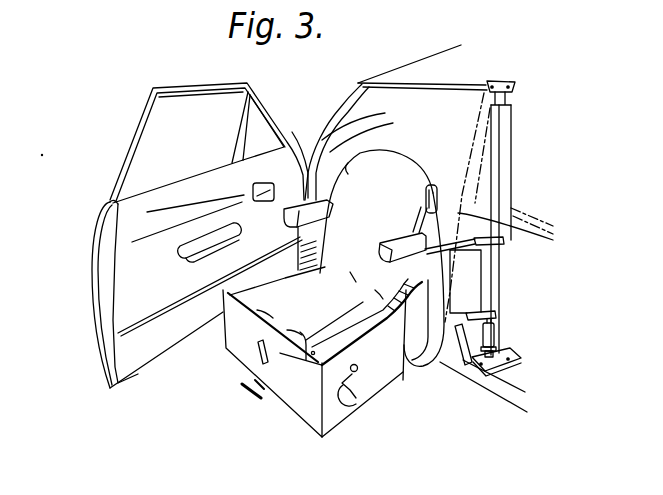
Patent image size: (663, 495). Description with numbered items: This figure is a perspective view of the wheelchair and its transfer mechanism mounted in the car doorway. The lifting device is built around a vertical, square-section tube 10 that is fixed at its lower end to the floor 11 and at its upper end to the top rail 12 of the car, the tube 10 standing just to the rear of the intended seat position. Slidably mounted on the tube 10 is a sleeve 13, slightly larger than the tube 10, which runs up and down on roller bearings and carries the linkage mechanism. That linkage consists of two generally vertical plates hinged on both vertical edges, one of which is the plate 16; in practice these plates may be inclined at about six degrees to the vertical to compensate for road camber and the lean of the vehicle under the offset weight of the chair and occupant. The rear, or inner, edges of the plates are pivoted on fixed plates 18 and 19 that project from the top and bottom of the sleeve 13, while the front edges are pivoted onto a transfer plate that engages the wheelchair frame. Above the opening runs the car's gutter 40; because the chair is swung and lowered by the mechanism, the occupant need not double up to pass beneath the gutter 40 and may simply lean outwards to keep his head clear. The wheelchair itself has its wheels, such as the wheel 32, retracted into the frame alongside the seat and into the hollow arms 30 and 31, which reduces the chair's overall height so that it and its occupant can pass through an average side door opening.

The vertical square-section tube 10 is at (505, 175).
The floor 11 is at (515, 365).
The top rail 12 is at (515, 88).
The sleeve 13 is at (502, 280).
The vertical plate 16 is at (467, 288).
The fixed plate 18 is at (507, 240).
The fixed plate 19 is at (463, 340).
The hollow arm 30 is at (278, 273).
The hollow arm 31 is at (373, 360).
The wheel 32 is at (418, 366).
The gutter 40 is at (447, 86).